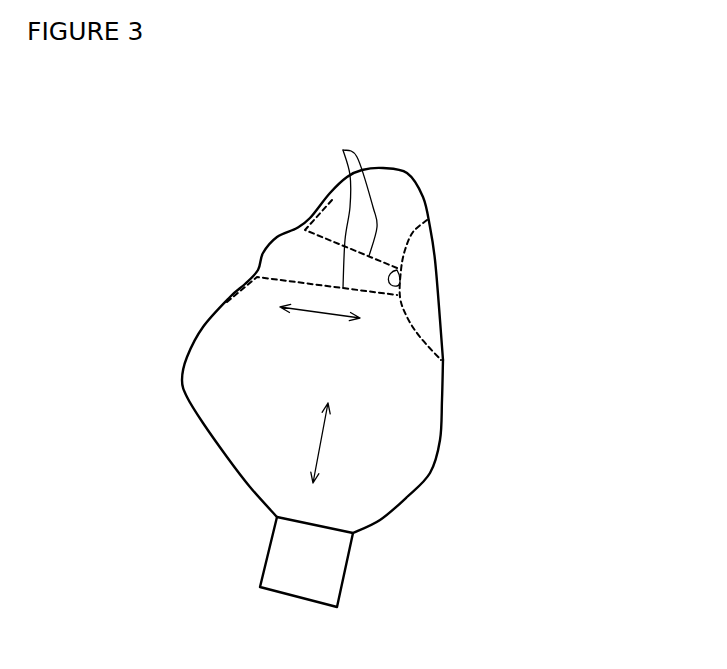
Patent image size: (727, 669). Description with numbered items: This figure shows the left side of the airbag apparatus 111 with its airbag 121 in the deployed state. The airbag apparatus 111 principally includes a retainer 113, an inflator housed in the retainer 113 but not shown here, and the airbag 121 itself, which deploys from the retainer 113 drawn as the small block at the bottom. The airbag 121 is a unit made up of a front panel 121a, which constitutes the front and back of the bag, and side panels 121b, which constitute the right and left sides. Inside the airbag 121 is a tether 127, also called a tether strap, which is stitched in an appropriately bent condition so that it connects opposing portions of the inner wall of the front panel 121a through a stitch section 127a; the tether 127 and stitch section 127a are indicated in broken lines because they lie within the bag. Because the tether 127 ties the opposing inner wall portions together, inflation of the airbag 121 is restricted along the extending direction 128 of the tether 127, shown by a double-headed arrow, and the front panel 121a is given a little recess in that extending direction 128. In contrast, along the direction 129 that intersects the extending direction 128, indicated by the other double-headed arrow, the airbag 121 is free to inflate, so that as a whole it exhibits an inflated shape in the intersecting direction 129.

The airbag apparatus 111 is at (197, 520).
The retainer 113 is at (333, 575).
The airbag 121 is at (438, 150).
The front panel 121a is at (420, 333).
The side panels 121b is at (405, 460).
The tether 127 is at (343, 150).
The stitch section 127a is at (245, 285).
The extending direction 128 is at (320, 335).
The intersecting direction 129 is at (346, 443).